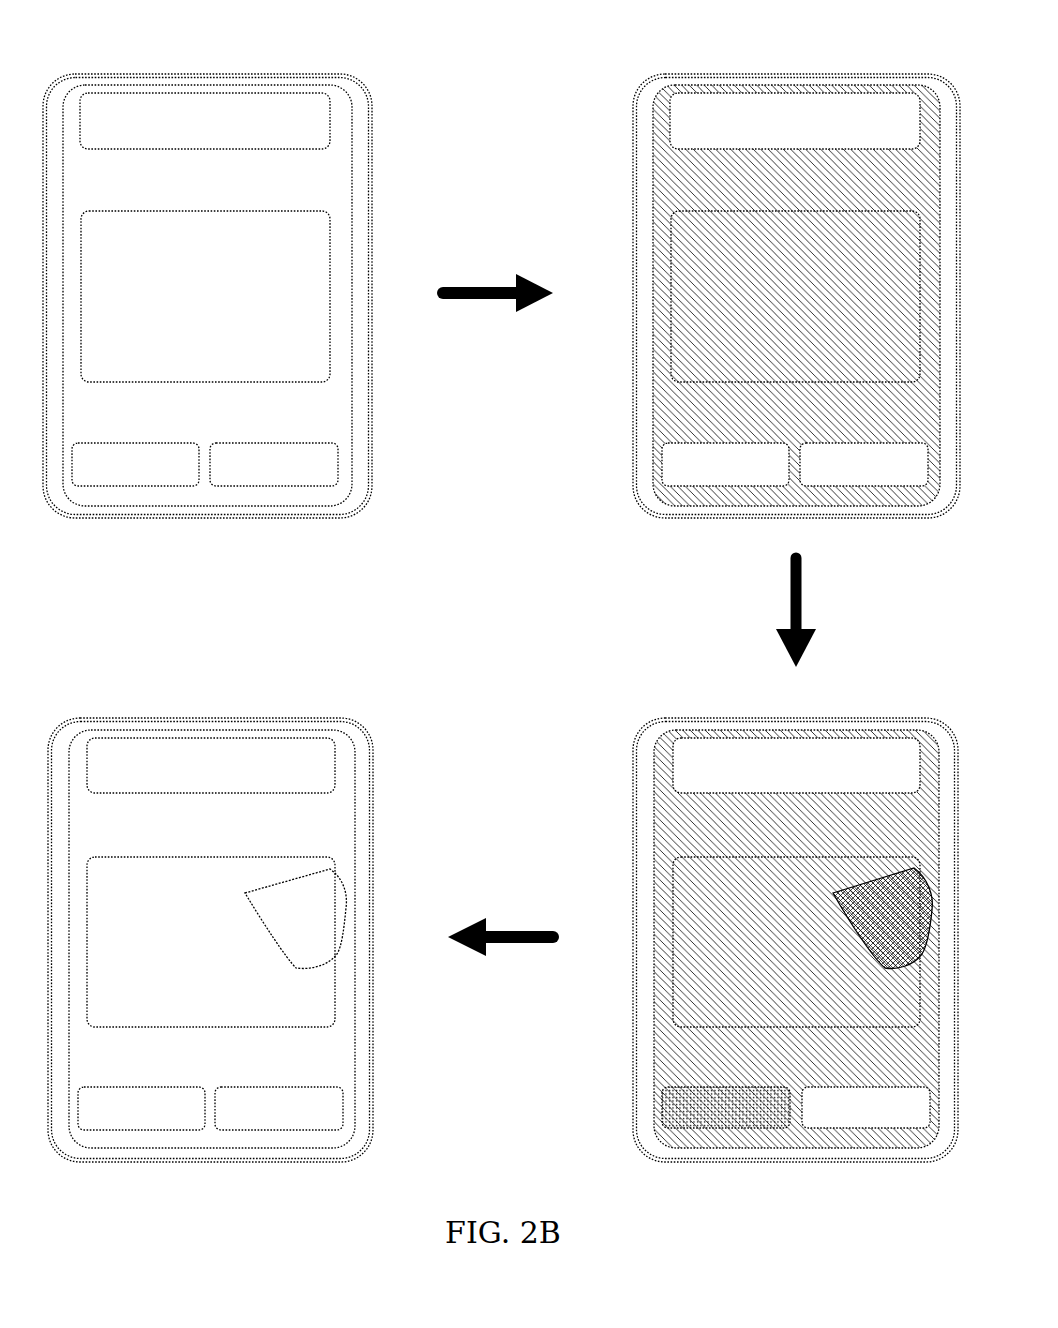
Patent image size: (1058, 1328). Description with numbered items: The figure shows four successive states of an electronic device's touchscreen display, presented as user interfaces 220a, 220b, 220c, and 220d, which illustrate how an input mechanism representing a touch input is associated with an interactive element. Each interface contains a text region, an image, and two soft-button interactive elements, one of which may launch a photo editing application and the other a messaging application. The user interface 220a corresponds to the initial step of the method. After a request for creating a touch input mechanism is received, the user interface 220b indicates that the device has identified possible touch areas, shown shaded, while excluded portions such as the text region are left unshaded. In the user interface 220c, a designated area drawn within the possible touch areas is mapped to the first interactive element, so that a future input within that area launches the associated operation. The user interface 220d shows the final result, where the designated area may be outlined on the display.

The user interface 220a is at (404, 79).
The user interface 220b is at (600, 79).
The user interface 220c is at (600, 726).
The user interface 220d is at (404, 726).